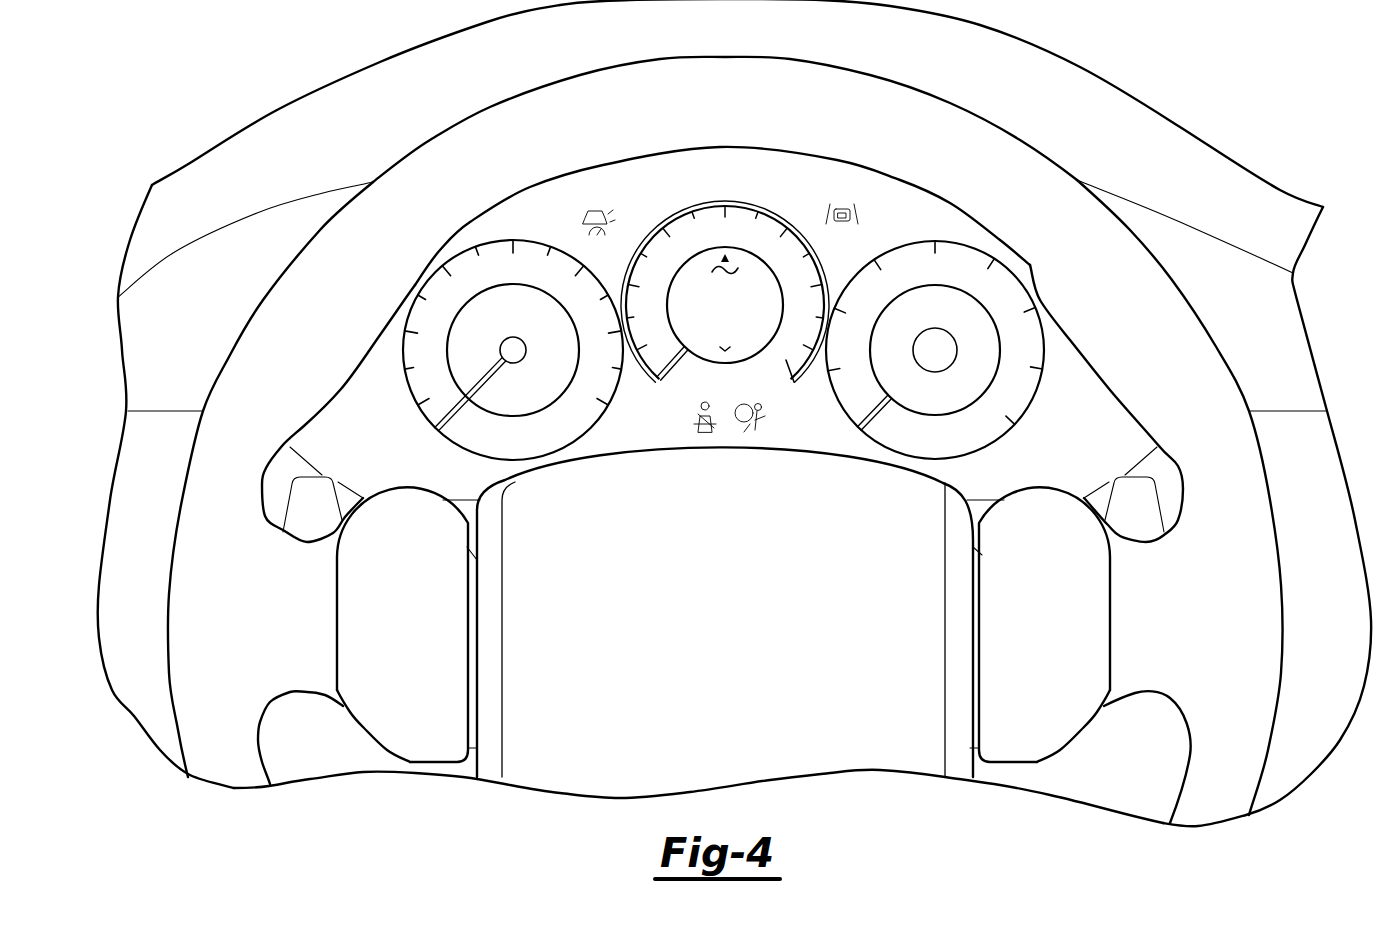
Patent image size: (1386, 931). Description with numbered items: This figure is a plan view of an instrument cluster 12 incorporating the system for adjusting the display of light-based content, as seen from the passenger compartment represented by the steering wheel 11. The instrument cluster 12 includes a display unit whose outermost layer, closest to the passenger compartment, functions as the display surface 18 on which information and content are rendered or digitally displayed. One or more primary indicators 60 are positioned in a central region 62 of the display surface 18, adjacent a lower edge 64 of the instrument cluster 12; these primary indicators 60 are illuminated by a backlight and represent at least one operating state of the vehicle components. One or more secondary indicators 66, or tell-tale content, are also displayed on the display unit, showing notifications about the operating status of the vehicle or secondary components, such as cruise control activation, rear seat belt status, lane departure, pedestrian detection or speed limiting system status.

The steering wheel 11 is at (982, 162).
The instrument cluster 12 is at (634, 224).
The display surface 18 is at (781, 180).
The primary indicators 60 is at (703, 434).
The central region 62 is at (726, 250).
The lower edge 64 is at (768, 428).
The secondary indicators 66 is at (587, 210).